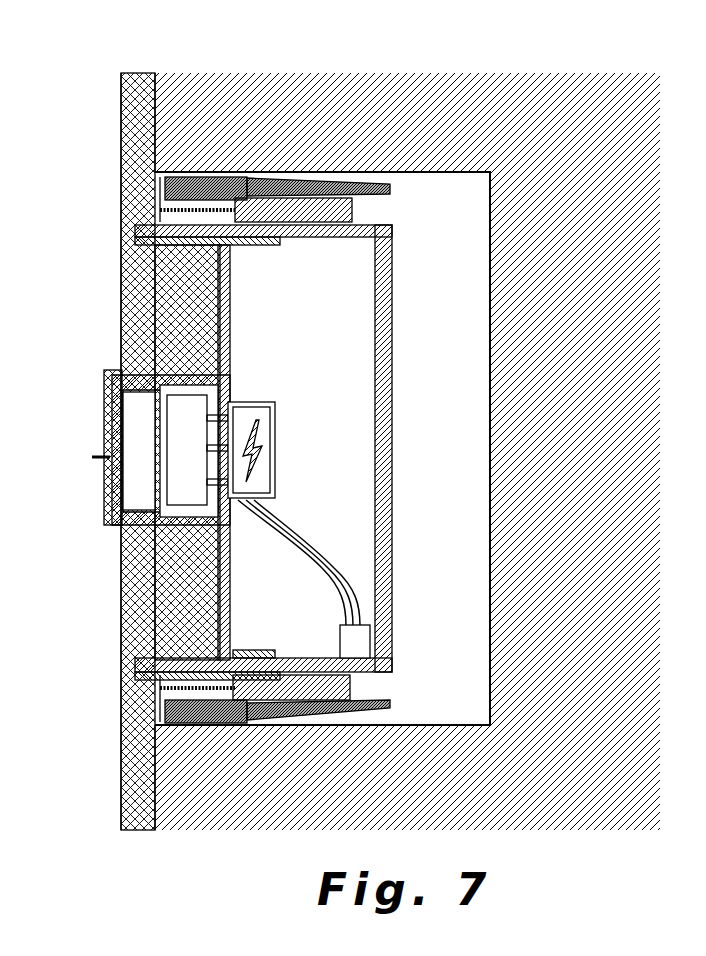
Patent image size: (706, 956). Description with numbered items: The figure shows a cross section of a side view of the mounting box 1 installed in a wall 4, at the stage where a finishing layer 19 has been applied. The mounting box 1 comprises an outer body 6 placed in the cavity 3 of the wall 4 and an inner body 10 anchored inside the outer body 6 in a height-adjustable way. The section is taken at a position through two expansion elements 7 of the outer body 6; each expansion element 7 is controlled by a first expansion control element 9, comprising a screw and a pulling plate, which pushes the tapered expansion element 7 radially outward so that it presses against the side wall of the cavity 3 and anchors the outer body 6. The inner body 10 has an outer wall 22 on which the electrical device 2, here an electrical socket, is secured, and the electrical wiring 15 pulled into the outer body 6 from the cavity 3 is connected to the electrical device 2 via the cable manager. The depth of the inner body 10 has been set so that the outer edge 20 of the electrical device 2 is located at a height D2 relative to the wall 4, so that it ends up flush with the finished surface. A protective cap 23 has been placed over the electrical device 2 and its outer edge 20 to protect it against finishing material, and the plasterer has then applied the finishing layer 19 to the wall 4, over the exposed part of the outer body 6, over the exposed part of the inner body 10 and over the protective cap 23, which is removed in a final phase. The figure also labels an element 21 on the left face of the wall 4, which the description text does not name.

The mounting box 1 is at (112, 727).
The electrical device 2 is at (124, 527).
The cavity 3 is at (450, 200).
The wall 4 is at (633, 207).
The outer body 6 is at (394, 363).
The expansion element 7 is at (233, 198).
The first expansion control element 9 is at (247, 700).
The inner body 10 is at (195, 558).
The electrical wiring 15 is at (360, 643).
The finishing layer 19 is at (150, 610).
The outer edge 20 is at (112, 385).
The insulation layer 21 is at (152, 130).
The outer wall 22 is at (228, 347).
The protective cap 23 is at (108, 430).
The height D2 is at (152, 63).